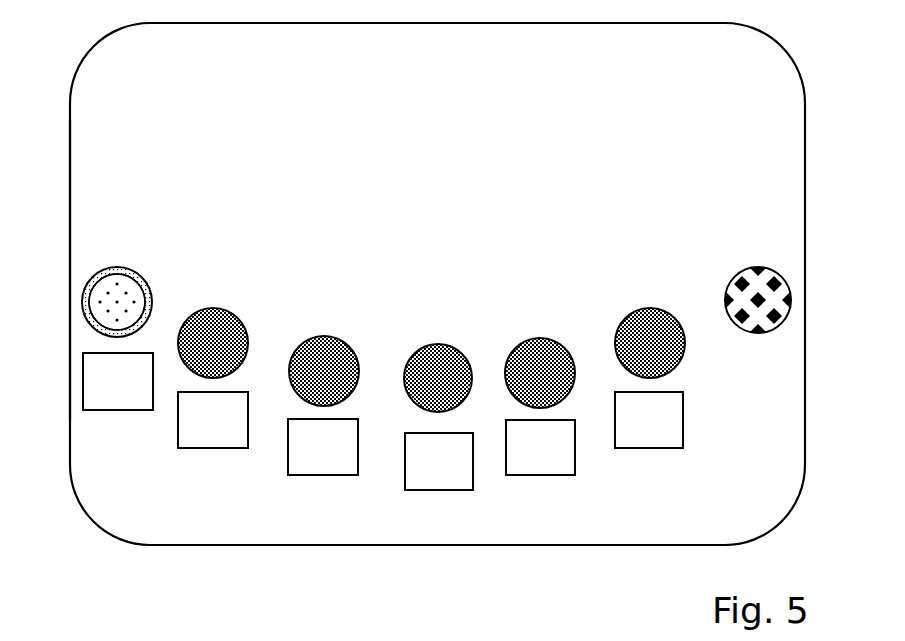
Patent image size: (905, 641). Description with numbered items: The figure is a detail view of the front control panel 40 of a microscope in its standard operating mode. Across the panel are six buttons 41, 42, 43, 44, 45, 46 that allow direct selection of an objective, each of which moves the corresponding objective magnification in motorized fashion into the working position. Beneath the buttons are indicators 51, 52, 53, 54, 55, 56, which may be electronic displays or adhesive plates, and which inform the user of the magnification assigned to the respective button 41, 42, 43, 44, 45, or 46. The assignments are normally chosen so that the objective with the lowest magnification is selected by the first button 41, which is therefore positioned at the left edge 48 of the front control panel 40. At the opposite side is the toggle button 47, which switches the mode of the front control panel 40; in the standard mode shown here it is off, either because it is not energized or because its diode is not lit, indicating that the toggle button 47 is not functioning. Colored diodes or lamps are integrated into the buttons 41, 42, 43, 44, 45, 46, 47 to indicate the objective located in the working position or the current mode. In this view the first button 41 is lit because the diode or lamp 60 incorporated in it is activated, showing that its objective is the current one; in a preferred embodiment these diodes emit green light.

The front control panel 40 is at (785, 165).
The first button 41 is at (115, 270).
The button 42 is at (217, 312).
The button 43 is at (332, 340).
The button 44 is at (427, 357).
The button 45 is at (537, 340).
The button 46 is at (645, 313).
The toggle button 47 is at (742, 272).
The left edge 48 is at (70, 217).
The indicator 51 is at (112, 402).
The indicator 52 is at (198, 430).
The indicator 53 is at (302, 467).
The indicator 54 is at (420, 478).
The indicator 55 is at (517, 465).
The indicator 56 is at (638, 438).
The diode or lamp 60 is at (132, 295).